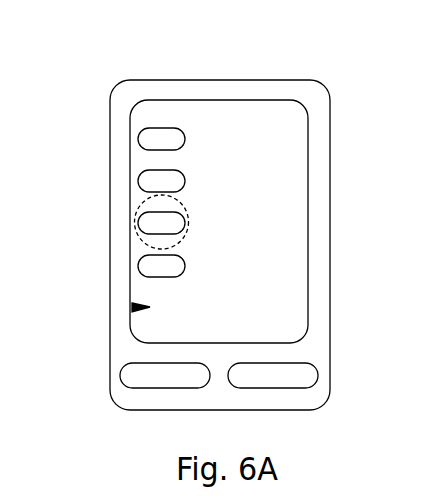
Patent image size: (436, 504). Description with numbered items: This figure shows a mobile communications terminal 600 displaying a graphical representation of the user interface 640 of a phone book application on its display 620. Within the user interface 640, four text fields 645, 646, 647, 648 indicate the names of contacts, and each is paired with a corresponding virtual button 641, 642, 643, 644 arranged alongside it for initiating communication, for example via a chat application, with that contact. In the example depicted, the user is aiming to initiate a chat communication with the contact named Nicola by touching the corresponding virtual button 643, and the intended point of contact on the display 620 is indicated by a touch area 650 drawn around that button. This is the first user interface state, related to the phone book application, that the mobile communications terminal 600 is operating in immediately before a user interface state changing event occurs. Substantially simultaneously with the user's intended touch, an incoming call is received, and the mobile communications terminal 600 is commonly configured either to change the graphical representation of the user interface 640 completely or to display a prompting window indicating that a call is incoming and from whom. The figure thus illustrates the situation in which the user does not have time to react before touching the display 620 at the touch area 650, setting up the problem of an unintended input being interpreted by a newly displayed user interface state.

The mobile communications terminal 600 is at (123, 68).
The display 620 is at (305, 335).
The graphical representation of the user interface 640 is at (132, 308).
The virtual button 641 is at (138, 139).
The virtual button 642 is at (138, 181).
The virtual button 643 is at (138, 224).
The virtual button 644 is at (138, 267).
The text field 645 is at (263, 141).
The text field 646 is at (290, 180).
The text field 647 is at (280, 224).
The text field 648 is at (280, 267).
The touch area 650 is at (140, 242).